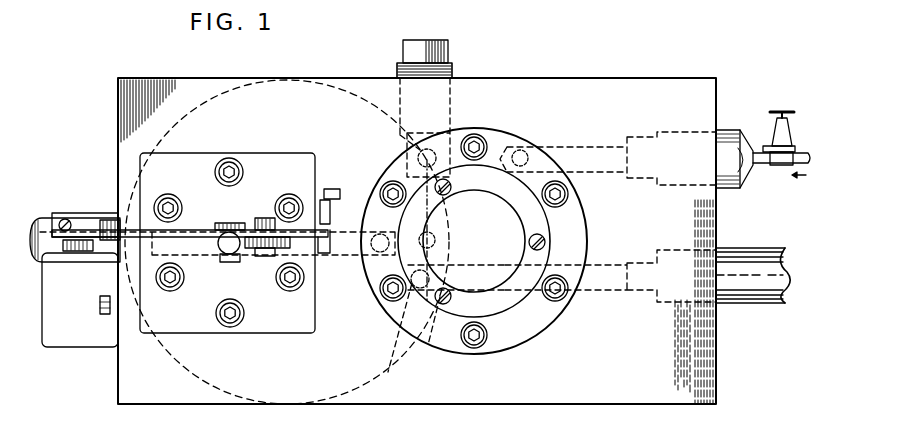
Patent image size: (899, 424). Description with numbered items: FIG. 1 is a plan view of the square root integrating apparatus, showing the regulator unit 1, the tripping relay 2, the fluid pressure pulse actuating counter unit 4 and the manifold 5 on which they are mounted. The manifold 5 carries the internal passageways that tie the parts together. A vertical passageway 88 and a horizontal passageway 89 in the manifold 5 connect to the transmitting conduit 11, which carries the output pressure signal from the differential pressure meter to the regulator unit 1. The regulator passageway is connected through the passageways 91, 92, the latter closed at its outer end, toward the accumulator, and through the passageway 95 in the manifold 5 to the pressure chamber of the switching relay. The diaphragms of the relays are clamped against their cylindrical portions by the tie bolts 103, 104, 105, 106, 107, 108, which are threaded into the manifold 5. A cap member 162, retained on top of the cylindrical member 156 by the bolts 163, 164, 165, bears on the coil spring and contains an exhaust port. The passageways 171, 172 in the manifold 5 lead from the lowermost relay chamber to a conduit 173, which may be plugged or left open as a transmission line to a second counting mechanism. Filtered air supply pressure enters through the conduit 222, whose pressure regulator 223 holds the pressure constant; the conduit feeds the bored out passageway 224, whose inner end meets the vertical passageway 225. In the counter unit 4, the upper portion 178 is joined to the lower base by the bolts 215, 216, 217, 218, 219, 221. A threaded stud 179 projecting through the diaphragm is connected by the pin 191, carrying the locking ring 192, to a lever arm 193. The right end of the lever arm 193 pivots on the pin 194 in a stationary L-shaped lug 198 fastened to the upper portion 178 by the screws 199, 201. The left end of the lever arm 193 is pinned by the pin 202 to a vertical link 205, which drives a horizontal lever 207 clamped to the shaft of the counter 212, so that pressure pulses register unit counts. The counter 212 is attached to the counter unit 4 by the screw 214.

The regulator unit 1 is at (167, 357).
The tripping relay 2 is at (549, 334).
The fluid pressure pulse actuating counter unit 4 is at (210, 228).
The manifold 5 is at (137, 75).
The transmitting conduit 11 is at (755, 293).
The vertical passageway 88 is at (412, 292).
The horizontal passageway 89 is at (592, 292).
The passageway 91 is at (436, 240).
The passageway 92 is at (437, 225).
The passageway 95 is at (418, 152).
The tie bolt 103 is at (563, 300).
The tie bolt 104 is at (475, 348).
The tie bolt 105 is at (382, 296).
The tie bolt 106 is at (385, 184).
The tie bolt 107 is at (474, 134).
The tie bolt 108 is at (568, 194).
The cylindrical member 156 is at (517, 325).
The cap member 162 is at (507, 222).
The connecting bolt 163 is at (545, 242).
The bolt 164 is at (443, 304).
The connecting bolt 165 is at (450, 184).
The passageway 171 is at (362, 268).
The passageway 172 is at (372, 252).
The conduit 173 is at (46, 218).
The upper portion 178 is at (193, 162).
The threaded stud 179 is at (222, 250).
The pin 191 is at (262, 218).
The locking ring 192 is at (228, 262).
The lever arm 193 is at (215, 228).
The pin 194 is at (266, 249).
The stationary L-shaped lug 198 is at (330, 207).
The screw 199 is at (336, 192).
The screw 201 is at (330, 233).
The pin 202 is at (108, 219).
The vertical link 205 is at (80, 213).
The horizontal lever 207 is at (98, 214).
The counter 212 is at (75, 348).
The screw 214 is at (100, 300).
The bolt 215 is at (166, 194).
The bolt 216 is at (230, 158).
The bolt 217 is at (289, 194).
The bolt 218 is at (290, 291).
The bolt 219 is at (231, 327).
The bolt 221 is at (170, 291).
The conduit 222 is at (728, 130).
The pressure regulator 223 is at (782, 110).
The bored out passageway 224 is at (598, 147).
The vertical passageway 225 is at (525, 150).